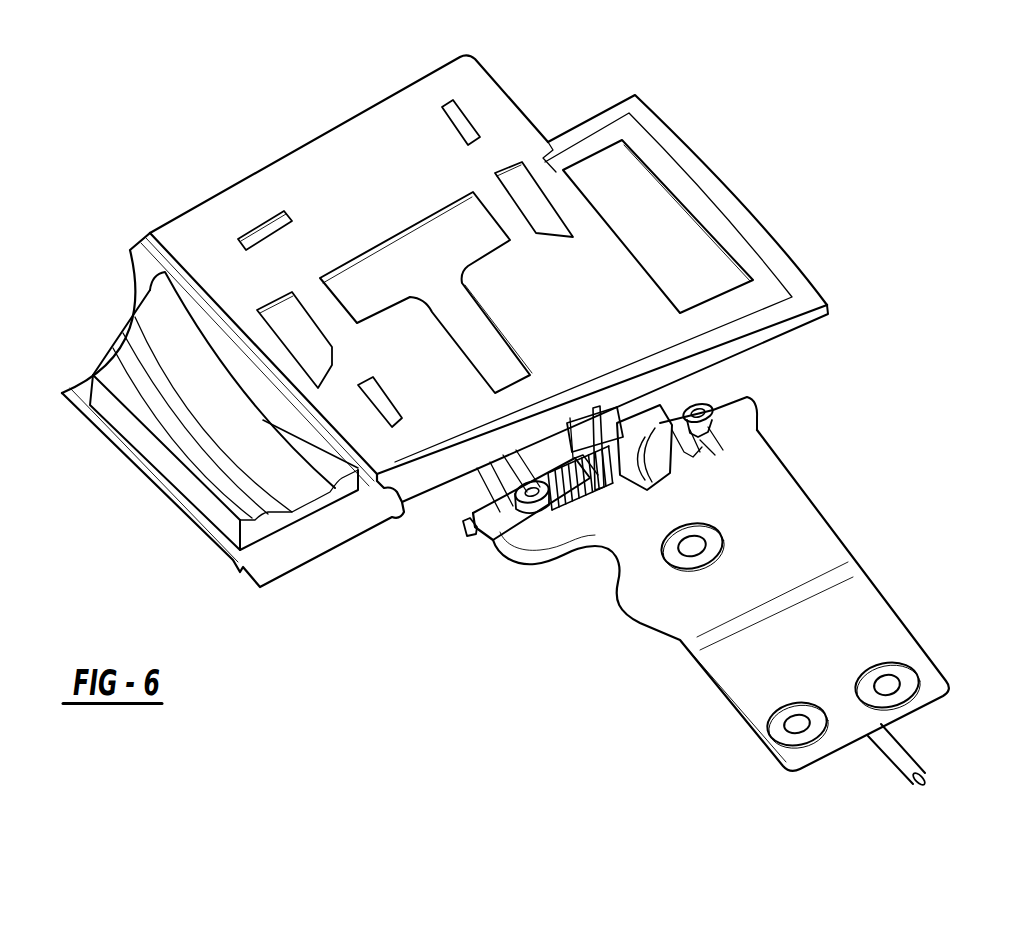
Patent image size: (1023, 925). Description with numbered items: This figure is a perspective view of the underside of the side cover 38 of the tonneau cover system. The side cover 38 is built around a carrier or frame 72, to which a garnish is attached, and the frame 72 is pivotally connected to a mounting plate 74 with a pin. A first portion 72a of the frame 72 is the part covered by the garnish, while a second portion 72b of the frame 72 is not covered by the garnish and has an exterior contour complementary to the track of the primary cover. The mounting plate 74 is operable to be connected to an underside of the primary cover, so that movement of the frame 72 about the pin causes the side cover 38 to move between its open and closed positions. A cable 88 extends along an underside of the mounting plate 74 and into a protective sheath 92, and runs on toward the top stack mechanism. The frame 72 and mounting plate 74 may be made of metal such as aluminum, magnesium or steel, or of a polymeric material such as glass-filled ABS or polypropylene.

The side cover 38 is at (820, 177).
The frame 72 is at (436, 321).
The first portion of frame 72a is at (343, 160).
The second portion of frame 72b is at (196, 396).
The mounting plate 74 is at (766, 507).
The cable 88 is at (941, 750).
The protective sheath 92 is at (898, 752).